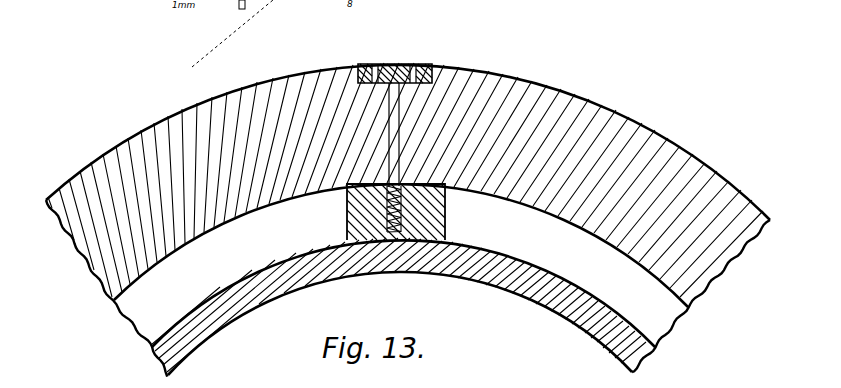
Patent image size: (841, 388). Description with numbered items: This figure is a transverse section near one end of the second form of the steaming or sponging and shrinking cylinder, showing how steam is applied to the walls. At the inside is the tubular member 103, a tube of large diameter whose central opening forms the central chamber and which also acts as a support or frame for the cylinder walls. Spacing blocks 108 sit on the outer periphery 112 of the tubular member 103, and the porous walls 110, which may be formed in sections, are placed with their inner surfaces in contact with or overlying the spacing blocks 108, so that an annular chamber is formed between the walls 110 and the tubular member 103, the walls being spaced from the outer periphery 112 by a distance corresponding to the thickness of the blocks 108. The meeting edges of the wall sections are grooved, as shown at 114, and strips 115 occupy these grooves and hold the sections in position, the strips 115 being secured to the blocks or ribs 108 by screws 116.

The tubular member 103 is at (558, 316).
The spacing blocks 108 is at (347, 220).
The porous walls 110 is at (625, 128).
The outer periphery of the tubular portion 112 is at (535, 265).
The grooves 114 is at (432, 76).
The strips 115 is at (402, 63).
The screws 116 is at (392, 63).